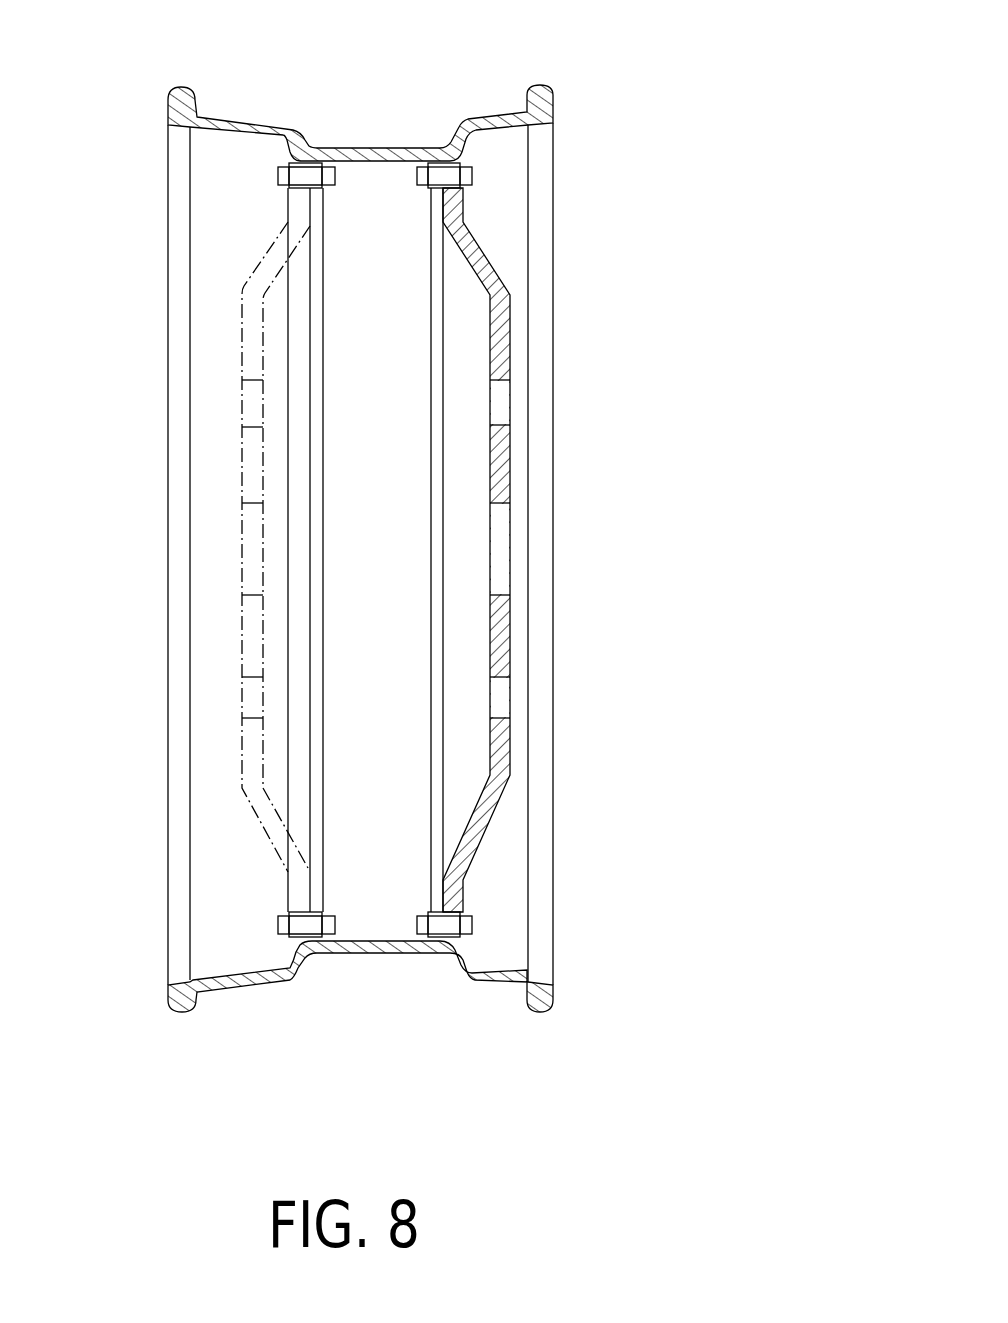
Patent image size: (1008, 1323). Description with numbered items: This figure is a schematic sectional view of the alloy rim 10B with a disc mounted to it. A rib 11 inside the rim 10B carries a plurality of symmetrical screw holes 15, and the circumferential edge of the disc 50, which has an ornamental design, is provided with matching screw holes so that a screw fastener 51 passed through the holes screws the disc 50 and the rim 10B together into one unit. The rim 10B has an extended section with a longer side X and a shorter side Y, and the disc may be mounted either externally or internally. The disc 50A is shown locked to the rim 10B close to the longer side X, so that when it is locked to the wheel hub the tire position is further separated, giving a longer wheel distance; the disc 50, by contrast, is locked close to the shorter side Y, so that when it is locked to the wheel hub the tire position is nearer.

The rim 10B is at (395, 148).
The longer side of the extended section X is at (230, 130).
The shorter side of the extended section Y is at (502, 122).
The screw fastener 51 is at (455, 178).
The screw holes 15 is at (312, 190).
The rib 11 is at (440, 340).
The disc 50 is at (510, 467).
The disc 50A is at (240, 643).